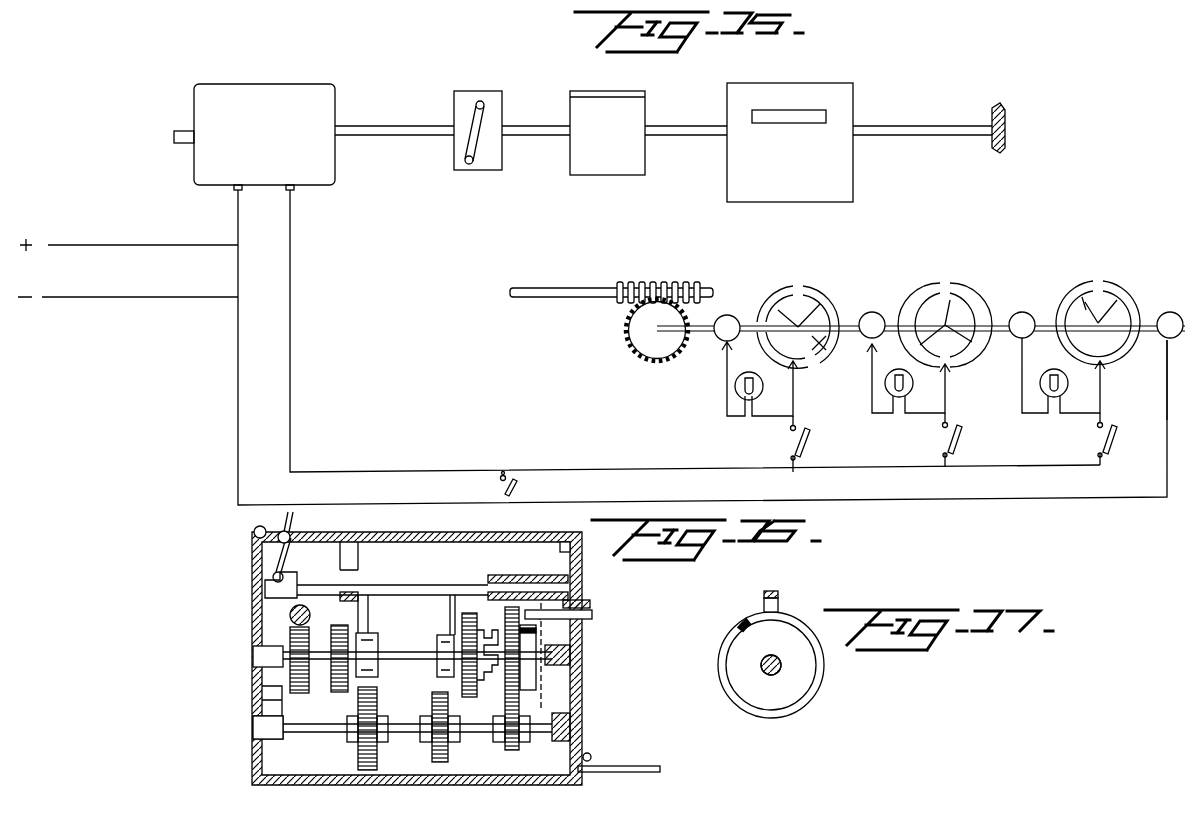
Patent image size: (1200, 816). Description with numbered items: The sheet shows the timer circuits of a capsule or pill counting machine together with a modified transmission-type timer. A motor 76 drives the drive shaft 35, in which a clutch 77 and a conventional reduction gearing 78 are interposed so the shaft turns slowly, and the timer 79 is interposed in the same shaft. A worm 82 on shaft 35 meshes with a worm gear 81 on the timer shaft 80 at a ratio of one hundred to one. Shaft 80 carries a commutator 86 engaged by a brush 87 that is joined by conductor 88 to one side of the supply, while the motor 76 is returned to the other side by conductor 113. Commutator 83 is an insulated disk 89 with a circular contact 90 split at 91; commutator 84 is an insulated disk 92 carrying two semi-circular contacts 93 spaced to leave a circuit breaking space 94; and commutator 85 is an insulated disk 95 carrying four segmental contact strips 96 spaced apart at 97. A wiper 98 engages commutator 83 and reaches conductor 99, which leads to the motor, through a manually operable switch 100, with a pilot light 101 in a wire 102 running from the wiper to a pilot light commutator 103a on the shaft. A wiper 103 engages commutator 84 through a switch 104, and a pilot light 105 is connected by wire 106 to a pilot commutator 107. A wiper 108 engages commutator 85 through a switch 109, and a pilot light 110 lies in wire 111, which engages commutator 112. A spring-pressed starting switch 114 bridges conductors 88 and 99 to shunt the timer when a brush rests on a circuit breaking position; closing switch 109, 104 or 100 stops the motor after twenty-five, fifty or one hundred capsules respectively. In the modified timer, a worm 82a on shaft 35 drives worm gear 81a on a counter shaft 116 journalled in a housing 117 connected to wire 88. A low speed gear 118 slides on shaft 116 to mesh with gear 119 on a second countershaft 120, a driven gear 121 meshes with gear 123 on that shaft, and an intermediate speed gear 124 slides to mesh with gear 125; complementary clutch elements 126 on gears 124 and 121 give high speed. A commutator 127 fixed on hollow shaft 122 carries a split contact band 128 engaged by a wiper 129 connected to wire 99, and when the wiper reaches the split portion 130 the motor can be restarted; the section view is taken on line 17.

In FIG. 15, the motor 76 is at (300, 84).
In FIG. 15, the clutch 77 is at (478, 91).
In FIG. 15, the reduction gearing 78 is at (600, 91).
In FIG. 15, the timer 79 is at (820, 83).
In FIG. 15, the conductor 113 is at (85, 245).
In FIG. 15, the worm 82 is at (672, 284).
In FIG. 15, the worm gear 81 is at (625, 336).
In FIG. 15, the commutator 112 is at (738, 315).
In FIG. 15, the circuit breaking space 97 is at (797, 292).
In FIG. 15, the commutator member 85 is at (838, 294).
In FIG. 15, the insulated disk 95 is at (824, 354).
In FIG. 15, the segmental contact strips 96 is at (786, 362).
In FIG. 15, the wire 111 is at (727, 368).
In FIG. 15, the pilot light 110 is at (736, 388).
In FIG. 15, the wiper 108 is at (794, 390).
In FIG. 15, the switch 109 is at (808, 440).
In FIG. 15, the commutator member 84 is at (975, 291).
In FIG. 15, the pilot commutator 107 is at (875, 312).
In FIG. 15, the insulated disk 92 is at (940, 294).
In FIG. 15, the circuit breaking space 94 is at (946, 288).
In FIG. 15, the semi-circular contacts 93 is at (973, 346).
In FIG. 15, the wire 106 is at (870, 388).
In FIG. 15, the pilot light 105 is at (938, 432).
In FIG. 15, the wiper 103 is at (947, 393).
In FIG. 15, the switch 104 is at (945, 437).
In FIG. 15, the timer shaft 80 is at (1020, 312).
In FIG. 15, the conductor 103a is at (1030, 320).
In FIG. 15, the commutator member 83 is at (1127, 284).
In FIG. 15, the insulated disk 89 is at (1081, 298).
In FIG. 15, the split 91 is at (1102, 285).
In FIG. 15, the circular contact 90 is at (1140, 300).
In FIG. 15, the commutator 86 is at (1170, 312).
In FIG. 15, the brush 87 is at (1175, 348).
In FIG. 15, the conductor 88 is at (1122, 498).
In FIG. 16, the conductor 88 is at (605, 760).
In FIG. 15, the wire 102 is at (1024, 396).
In FIG. 15, the pilot light 101 is at (1062, 400).
In FIG. 15, the wiper 98 is at (1102, 378).
In FIG. 15, the manually operable switch 100 is at (1114, 438).
In FIG. 15, the conductor 99 is at (1027, 465).
In FIG. 16, the conductor 99 is at (597, 608).
In FIG. 15, the starting switch 114 is at (516, 488).
In FIG. 16, the counter shaft 116 is at (392, 650).
In FIG. 17, the counter shaft 116 is at (765, 668).
In FIG. 16, the low speed gear 118 is at (285, 690).
In FIG. 16, the second countershaft 120 is at (262, 738).
In FIG. 16, the gear 119 is at (310, 735).
In FIG. 16, the drive shaft 35 is at (292, 612).
In FIG. 16, the worm 82a is at (292, 626).
In FIG. 16, the worm gear 81a is at (330, 668).
In FIG. 16, the intermediate speed gear 124 is at (490, 625).
In FIG. 16, the clutch elements 126 is at (470, 612).
In FIG. 16, the driven gear 121 is at (510, 610).
In FIG. 16, the gear 125 is at (440, 750).
In FIG. 16, the gear 123 is at (512, 745).
In FIG. 16, the hollow shaft 122 is at (572, 655).
In FIG. 16, the split contact band 128 is at (545, 680).
In FIG. 17, the split contact band 128 is at (820, 690).
In FIG. 16, the section line 17 is at (550, 635).
In FIG. 16, the wiper 129 is at (545, 616).
In FIG. 17, the wiper 129 is at (778, 594).
In FIG. 16, the housing 117 is at (582, 778).
In FIG. 17, the commutator 127 is at (776, 702).
In FIG. 17, the split portion 130 is at (752, 615).